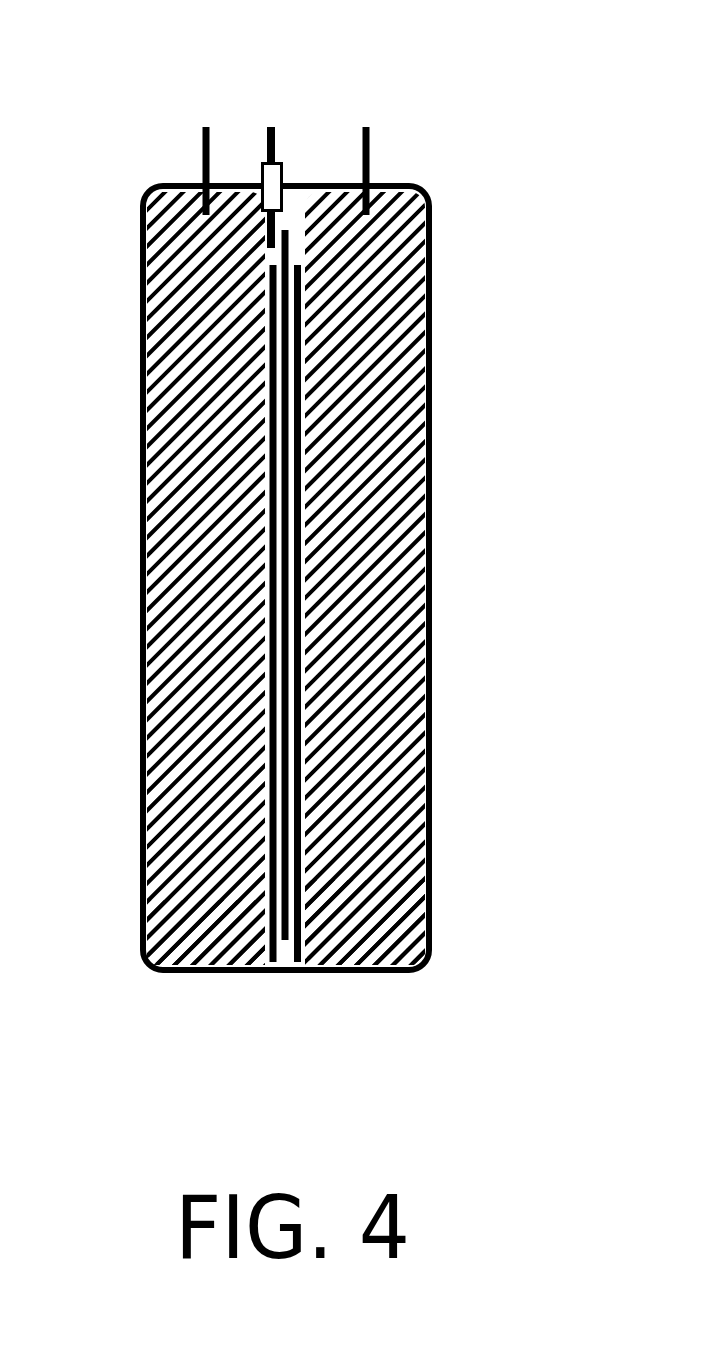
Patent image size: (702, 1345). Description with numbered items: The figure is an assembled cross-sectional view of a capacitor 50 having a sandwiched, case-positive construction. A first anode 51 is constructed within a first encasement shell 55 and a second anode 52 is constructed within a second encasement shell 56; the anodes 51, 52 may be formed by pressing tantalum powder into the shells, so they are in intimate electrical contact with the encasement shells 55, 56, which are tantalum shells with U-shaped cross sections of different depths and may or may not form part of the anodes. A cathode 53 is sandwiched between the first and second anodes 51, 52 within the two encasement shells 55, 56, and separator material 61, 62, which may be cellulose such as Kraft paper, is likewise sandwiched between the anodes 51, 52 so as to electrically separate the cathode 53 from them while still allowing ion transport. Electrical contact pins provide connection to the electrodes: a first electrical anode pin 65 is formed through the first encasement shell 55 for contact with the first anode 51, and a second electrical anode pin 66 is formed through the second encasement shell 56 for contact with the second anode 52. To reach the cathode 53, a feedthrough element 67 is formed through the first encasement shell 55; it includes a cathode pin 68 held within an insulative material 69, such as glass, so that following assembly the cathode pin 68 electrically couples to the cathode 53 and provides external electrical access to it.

The capacitor 50 is at (510, 366).
The first anode 51 is at (175, 945).
The second anode 52 is at (377, 930).
The cathode 53 is at (270, 926).
The first encasement shell 55 is at (140, 608).
The second encasement shell 56 is at (432, 647).
The separator material 61 is at (220, 972).
The separator material 62 is at (302, 898).
The first electrical anode pin 65 is at (203, 168).
The second electrical anode pin 66 is at (368, 166).
The feedthrough element 67 is at (300, 115).
The cathode pin 68 is at (267, 133).
The insulative material 69 is at (262, 182).